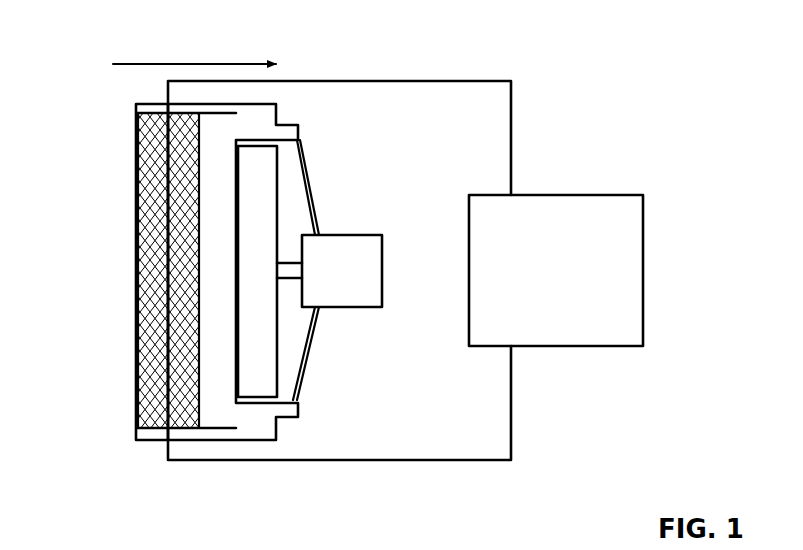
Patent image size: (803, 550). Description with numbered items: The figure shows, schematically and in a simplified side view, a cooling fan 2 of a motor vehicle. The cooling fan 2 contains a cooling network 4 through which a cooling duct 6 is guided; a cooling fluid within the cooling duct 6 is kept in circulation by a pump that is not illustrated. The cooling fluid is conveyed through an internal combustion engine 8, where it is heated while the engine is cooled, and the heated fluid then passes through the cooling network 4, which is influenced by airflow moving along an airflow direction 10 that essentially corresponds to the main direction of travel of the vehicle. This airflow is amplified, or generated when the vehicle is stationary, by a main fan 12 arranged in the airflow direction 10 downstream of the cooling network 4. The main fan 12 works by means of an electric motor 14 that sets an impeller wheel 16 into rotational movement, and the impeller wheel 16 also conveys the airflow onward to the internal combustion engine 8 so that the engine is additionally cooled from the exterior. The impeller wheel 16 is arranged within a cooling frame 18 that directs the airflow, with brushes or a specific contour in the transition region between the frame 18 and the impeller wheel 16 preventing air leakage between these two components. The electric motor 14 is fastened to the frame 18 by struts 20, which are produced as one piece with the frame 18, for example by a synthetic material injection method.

The cooling fan 2 is at (346, 262).
The cooling network 4 is at (148, 183).
The cooling duct 6 is at (355, 81).
The internal combustion engine 8 is at (556, 195).
The airflow direction 10 is at (185, 64).
The main fan 12 is at (356, 185).
The electric motor 14 is at (355, 298).
The impeller wheel 16 is at (248, 325).
The cooling frame 18 is at (248, 427).
The struts 20 is at (303, 368).